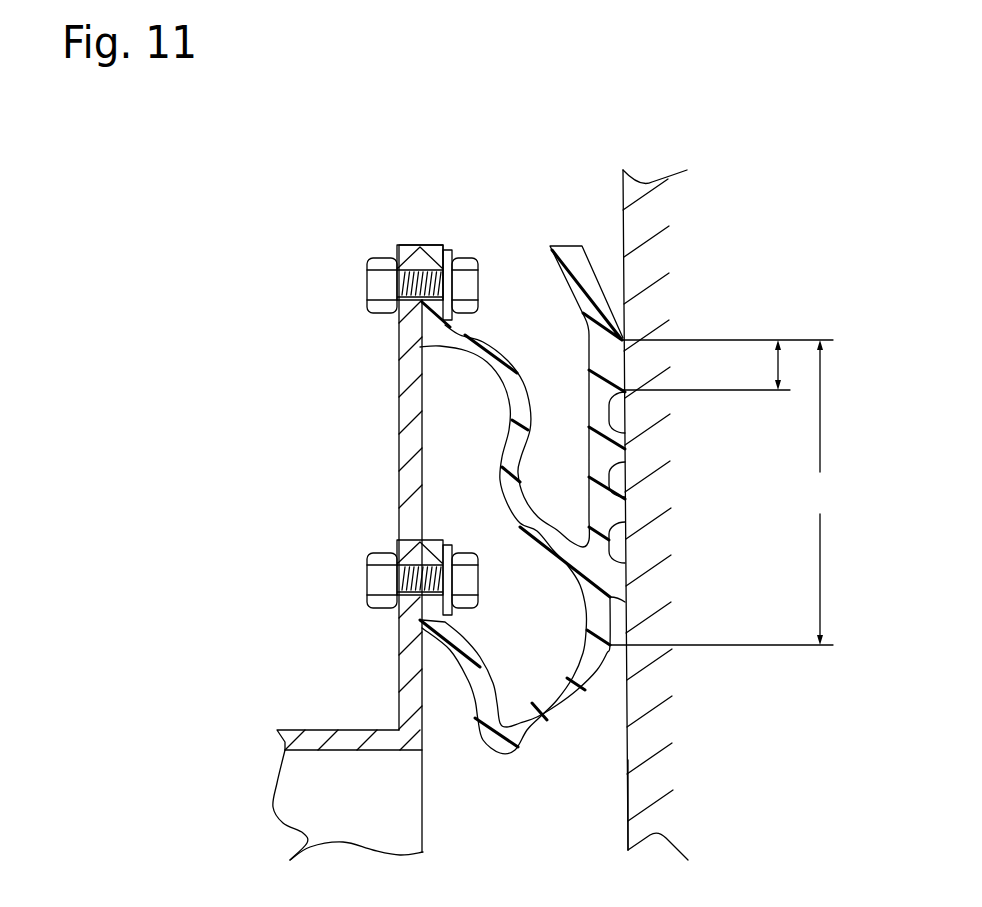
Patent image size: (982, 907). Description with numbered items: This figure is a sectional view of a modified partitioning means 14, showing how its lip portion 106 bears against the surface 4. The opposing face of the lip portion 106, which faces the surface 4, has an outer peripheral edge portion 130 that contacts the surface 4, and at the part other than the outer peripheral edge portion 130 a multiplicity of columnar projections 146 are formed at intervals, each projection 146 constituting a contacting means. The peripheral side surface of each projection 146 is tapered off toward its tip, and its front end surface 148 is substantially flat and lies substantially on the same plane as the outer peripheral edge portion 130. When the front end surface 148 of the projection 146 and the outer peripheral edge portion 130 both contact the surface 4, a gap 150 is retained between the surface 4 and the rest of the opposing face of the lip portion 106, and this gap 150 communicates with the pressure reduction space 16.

The surface 4 is at (623, 220).
The partitioning means 14 is at (552, 755).
The pressure reduction space 16 is at (610, 743).
The lip portion 106 is at (728, 492).
The outer peripheral edge portion 130 is at (780, 358).
The columnar projection 146 is at (627, 445).
The front end surface 148 is at (627, 537).
The gap 150 is at (618, 550).